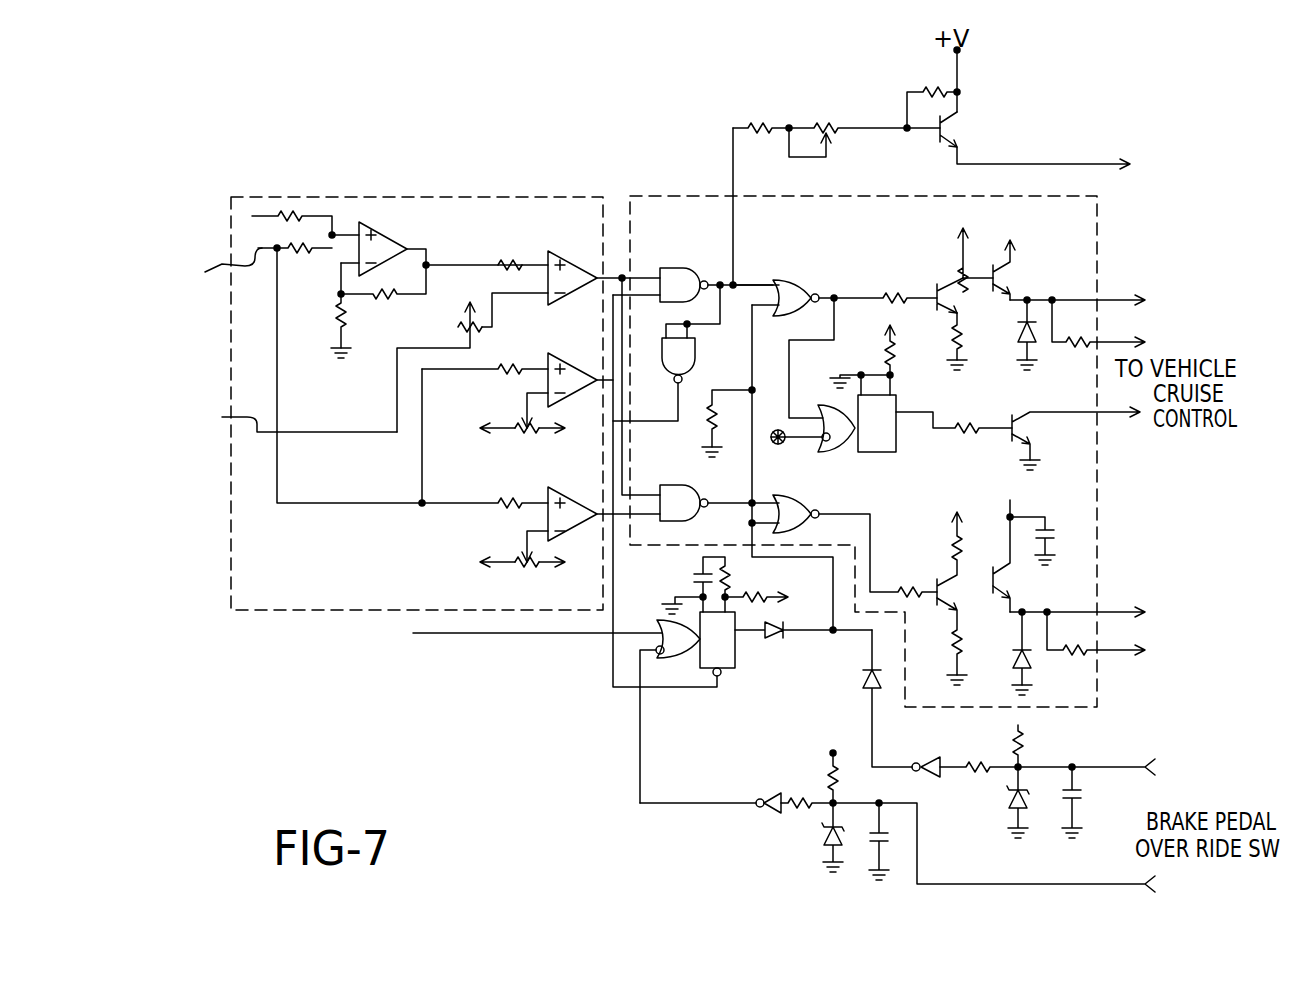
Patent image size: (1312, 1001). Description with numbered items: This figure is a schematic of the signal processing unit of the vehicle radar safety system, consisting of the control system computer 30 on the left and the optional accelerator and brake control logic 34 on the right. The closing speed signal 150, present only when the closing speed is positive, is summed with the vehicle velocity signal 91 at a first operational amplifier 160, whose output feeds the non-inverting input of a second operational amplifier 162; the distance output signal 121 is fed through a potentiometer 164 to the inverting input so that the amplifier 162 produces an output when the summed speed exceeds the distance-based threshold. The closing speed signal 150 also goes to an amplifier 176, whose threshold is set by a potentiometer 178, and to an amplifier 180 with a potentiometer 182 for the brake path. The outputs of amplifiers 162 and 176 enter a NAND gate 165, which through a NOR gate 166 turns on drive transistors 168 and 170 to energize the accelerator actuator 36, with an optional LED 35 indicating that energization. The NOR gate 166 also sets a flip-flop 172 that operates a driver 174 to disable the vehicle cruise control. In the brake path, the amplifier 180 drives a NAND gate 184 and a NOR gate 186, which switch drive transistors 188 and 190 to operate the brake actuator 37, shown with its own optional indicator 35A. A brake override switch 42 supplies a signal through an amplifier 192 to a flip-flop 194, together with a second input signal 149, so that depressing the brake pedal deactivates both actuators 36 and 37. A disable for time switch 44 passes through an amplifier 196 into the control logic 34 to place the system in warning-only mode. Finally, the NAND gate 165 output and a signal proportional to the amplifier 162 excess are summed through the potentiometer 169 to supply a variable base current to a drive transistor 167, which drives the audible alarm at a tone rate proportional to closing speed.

The control system computer 30 is at (442, 198).
The accelerator and brake control logic 34 is at (1083, 230).
The optional LED 35 is at (1118, 342).
The optional cruise control output 35A is at (1112, 650).
The accelerator actuator 36 is at (1080, 300).
The brake actuator 37 is at (1112, 612).
The brake override switch 42 is at (1150, 884).
The disable for time switch 44 is at (1150, 763).
The vehicle velocity signal 91 is at (252, 216).
The distance output signal 121 is at (290, 412).
The second input signal 149 is at (430, 634).
The closing speed signal 150 is at (215, 281).
The first operational amplifier 160 is at (382, 232).
The second operational amplifier 162 is at (582, 266).
The potentiometer 164 is at (458, 327).
The NAND gate 165 is at (696, 268).
The NOR gate 166 is at (806, 258).
The drive transistor 167 is at (958, 142).
The drive transistor 168 is at (935, 290).
The potentiometer 169 is at (826, 126).
The drive transistor 170 is at (1012, 242).
The flip-flop 172 is at (885, 452).
The driver 174 is at (1025, 432).
The amplifier 176 is at (577, 353).
The potentiometer 178 is at (526, 436).
The amplifier 180 is at (545, 504).
The potentiometer 182 is at (527, 567).
The NAND gate 184 is at (686, 486).
The NOR gate 186 is at (820, 472).
The drive transistor 188 is at (937, 586).
The drive transistor 190 is at (993, 580).
The amplifier 192 is at (772, 815).
The flip-flop 194 is at (735, 660).
The amplifier 196 is at (958, 746).